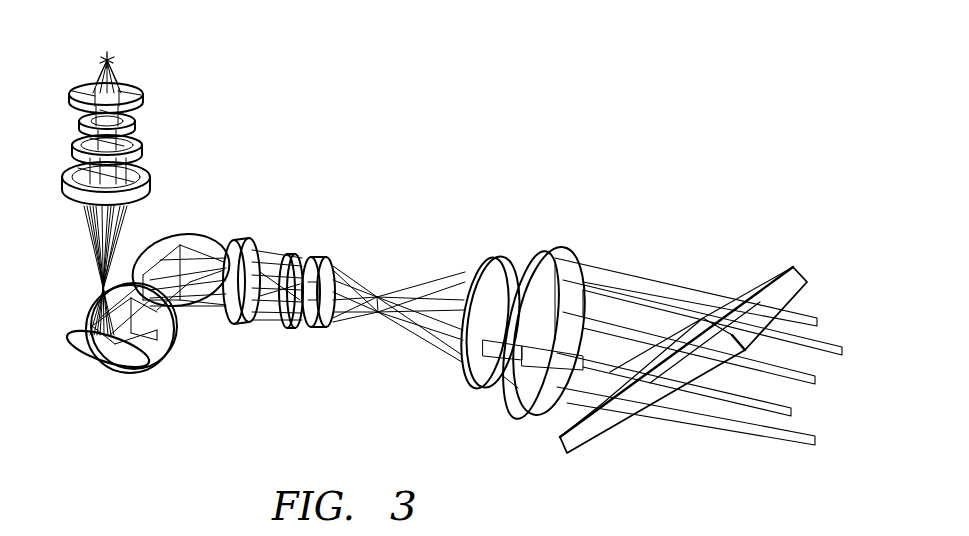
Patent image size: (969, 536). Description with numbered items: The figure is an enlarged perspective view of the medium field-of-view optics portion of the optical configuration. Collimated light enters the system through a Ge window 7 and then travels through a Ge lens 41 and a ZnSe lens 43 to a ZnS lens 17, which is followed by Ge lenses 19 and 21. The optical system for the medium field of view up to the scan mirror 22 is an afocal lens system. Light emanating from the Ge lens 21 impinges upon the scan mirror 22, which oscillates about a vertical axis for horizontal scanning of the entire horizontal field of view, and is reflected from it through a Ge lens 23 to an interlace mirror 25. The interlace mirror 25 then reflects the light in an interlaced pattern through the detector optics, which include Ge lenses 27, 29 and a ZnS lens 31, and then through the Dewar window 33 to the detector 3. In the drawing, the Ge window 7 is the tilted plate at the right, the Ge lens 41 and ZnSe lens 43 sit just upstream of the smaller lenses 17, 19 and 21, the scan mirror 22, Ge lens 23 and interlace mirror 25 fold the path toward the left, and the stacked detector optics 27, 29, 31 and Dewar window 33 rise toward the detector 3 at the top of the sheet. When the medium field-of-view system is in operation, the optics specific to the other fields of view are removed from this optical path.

The detector 3 is at (107, 58).
The Dewar window 33 is at (71, 99).
The ZnS lens 31 is at (79, 126).
The Ge lens 29 is at (71, 145).
The Ge lens 27 is at (65, 182).
The interlace mirror 25 is at (102, 354).
The Ge lens 23 is at (170, 354).
The scan mirror 22 is at (188, 238).
The Ge lens 21 is at (228, 322).
The Ge lens 19 is at (284, 330).
The ZnS lens 17 is at (310, 330).
The ZnSe lens 43 is at (464, 387).
The Ge lens 41 is at (518, 416).
The Ge window 7 is at (601, 439).